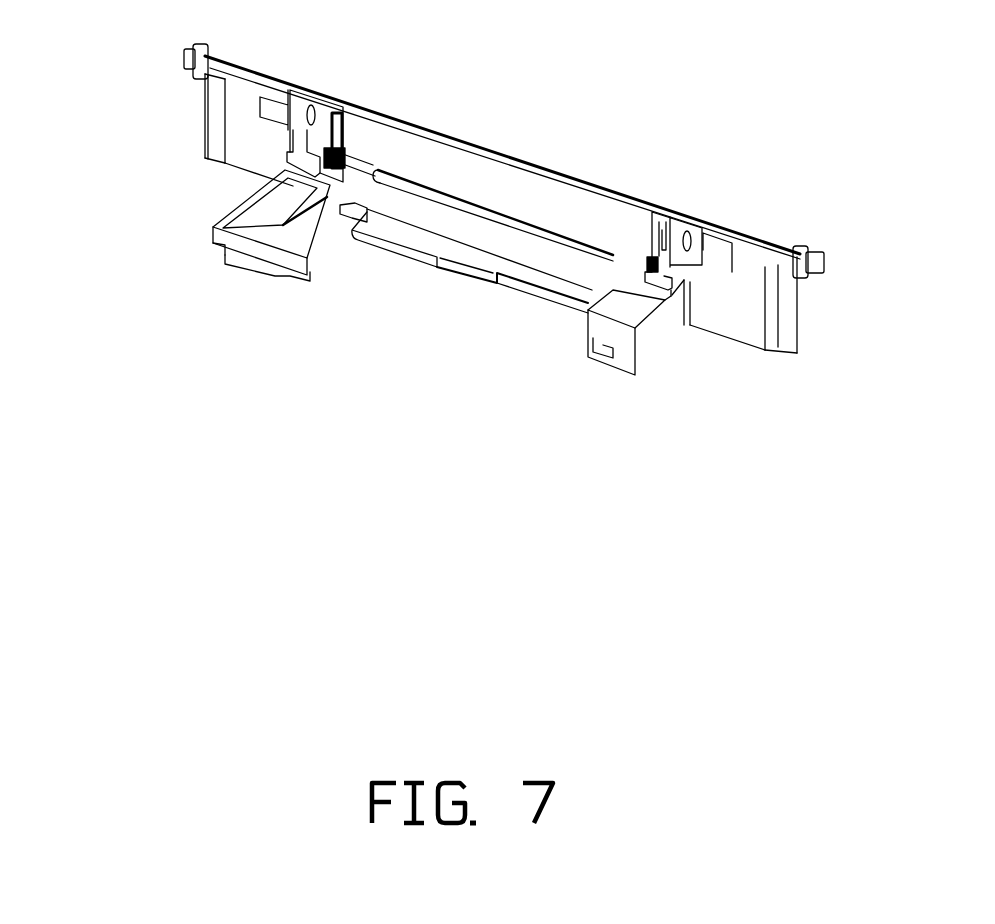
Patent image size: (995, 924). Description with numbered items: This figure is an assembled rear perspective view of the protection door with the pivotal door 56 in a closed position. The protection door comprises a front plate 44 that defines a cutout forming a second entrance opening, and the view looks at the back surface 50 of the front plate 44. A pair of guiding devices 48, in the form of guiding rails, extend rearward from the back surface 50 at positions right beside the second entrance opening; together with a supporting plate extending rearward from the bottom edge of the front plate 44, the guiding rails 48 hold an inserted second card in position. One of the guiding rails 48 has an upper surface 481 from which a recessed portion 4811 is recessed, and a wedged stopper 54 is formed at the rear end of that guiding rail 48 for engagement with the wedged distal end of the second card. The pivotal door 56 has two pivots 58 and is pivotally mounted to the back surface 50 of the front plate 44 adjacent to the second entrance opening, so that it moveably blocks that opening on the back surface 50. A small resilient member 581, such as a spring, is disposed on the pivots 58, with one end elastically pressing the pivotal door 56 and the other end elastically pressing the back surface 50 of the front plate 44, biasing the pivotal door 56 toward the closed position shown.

The front plate 44 is at (800, 343).
The guiding devices 48 is at (323, 237).
The upper surface 481 is at (198, 229).
The recessed portion 4811 is at (213, 243).
The back surface 50 is at (724, 340).
The wedged stopper 54 is at (260, 283).
The pivotal door 56 is at (487, 230).
The pivots 58 is at (361, 87).
The resilient member 581 is at (323, 120).